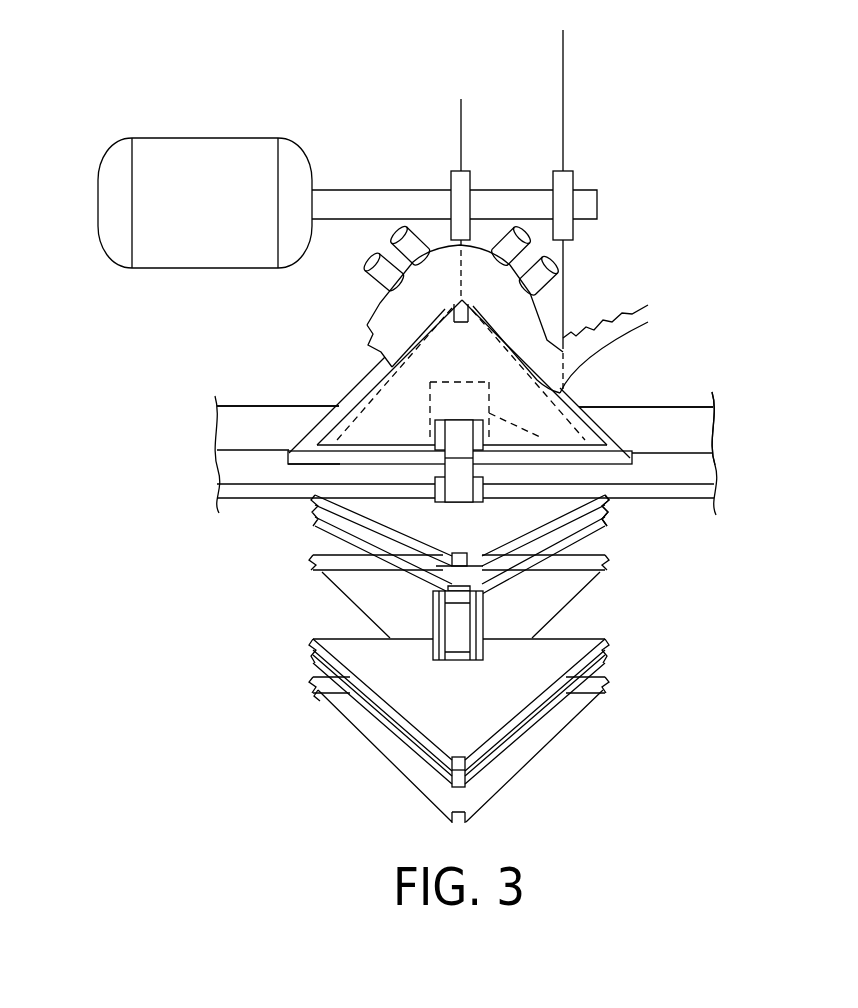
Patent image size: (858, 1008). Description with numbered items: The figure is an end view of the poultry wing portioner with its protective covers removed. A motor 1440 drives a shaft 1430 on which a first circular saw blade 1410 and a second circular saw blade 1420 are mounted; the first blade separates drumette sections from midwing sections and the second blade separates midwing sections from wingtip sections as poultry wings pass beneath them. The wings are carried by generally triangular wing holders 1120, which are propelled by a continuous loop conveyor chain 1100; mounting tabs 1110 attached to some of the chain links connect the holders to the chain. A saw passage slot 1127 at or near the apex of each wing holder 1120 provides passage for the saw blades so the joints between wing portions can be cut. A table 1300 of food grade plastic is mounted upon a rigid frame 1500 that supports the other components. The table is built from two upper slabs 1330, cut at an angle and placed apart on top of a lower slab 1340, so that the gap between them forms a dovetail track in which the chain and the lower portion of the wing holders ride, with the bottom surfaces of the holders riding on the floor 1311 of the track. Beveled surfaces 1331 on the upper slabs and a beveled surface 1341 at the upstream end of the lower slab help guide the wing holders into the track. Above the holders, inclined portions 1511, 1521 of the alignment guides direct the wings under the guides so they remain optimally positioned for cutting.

The chain 1100 is at (433, 648).
The mounting tabs 1110 is at (613, 520).
The wing holders 1120 is at (590, 350).
The saw passage slots 1127 is at (387, 358).
The table 1300 is at (706, 406).
The floor 1311 is at (387, 452).
The upper slabs 1330 is at (227, 428).
The beveled surfaces 1331 is at (328, 405).
The lower slab 1340 is at (707, 470).
The beveled surface 1341 is at (297, 465).
The first circular saw blade 1410 is at (458, 125).
The second circular saw blade 1420 is at (566, 105).
The shaft 1430 is at (347, 189).
The motor 1440 is at (205, 138).
The rigid frame 1500 is at (708, 493).
The inclined portion 1511 is at (400, 221).
The inclined portion 1521 is at (521, 222).